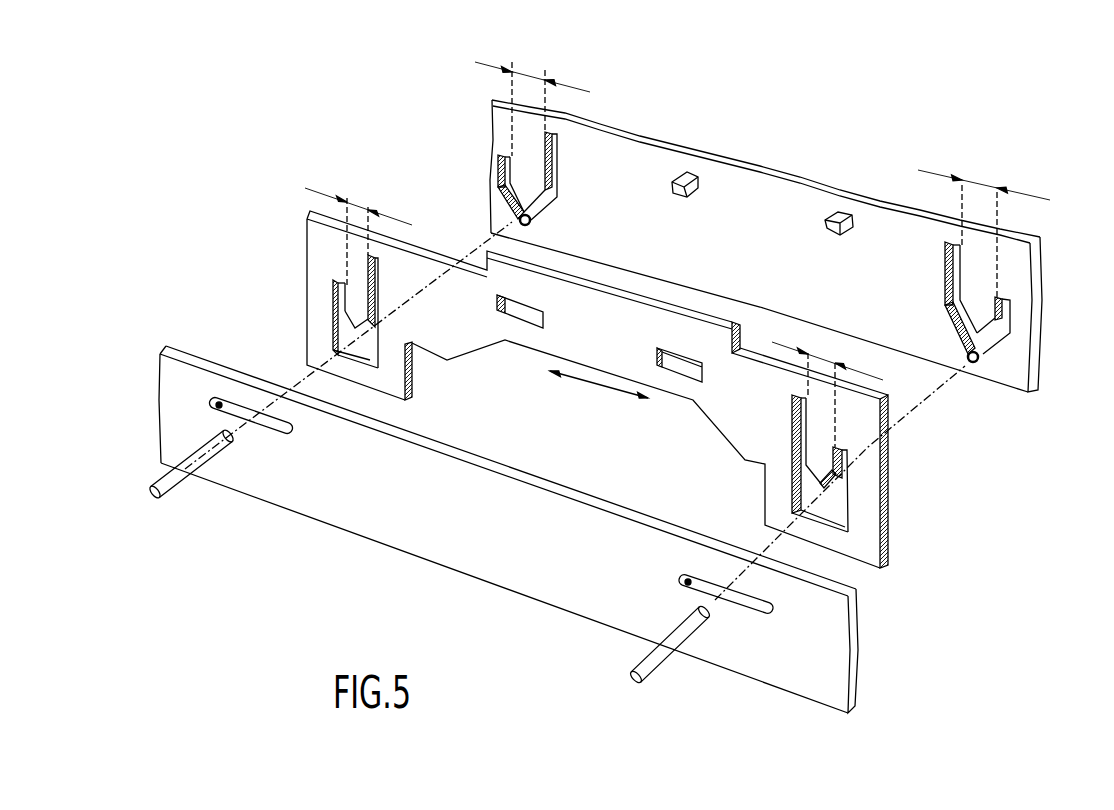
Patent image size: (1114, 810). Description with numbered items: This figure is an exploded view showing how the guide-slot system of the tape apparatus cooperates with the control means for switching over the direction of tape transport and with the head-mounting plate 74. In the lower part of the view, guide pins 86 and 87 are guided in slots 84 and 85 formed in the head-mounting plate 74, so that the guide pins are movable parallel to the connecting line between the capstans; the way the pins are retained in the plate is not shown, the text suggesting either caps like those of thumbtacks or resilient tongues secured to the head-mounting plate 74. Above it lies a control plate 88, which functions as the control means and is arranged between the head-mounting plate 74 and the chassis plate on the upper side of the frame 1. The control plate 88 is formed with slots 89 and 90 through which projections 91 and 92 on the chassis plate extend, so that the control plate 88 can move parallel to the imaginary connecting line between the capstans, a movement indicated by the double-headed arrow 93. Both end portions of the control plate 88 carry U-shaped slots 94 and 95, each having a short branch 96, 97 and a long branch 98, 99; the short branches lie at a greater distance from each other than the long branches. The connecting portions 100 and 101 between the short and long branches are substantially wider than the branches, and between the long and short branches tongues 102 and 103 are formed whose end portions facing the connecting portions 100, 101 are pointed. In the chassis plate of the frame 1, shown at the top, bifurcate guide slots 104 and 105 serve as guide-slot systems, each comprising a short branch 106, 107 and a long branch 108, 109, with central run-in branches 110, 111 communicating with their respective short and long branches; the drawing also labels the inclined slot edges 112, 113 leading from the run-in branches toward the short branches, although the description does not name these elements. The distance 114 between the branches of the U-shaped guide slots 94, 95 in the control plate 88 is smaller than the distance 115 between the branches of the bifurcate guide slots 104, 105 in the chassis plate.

The frame 1 is at (733, 192).
The head-mounting plate 74 is at (493, 487).
The slot 84 is at (212, 405).
The slot 85 is at (760, 603).
The guide pin 86 is at (162, 477).
The guide pin 87 is at (637, 670).
The control plate 88 is at (562, 333).
The slot 89 is at (528, 316).
The slot 90 is at (682, 364).
The projection 91 is at (680, 195).
The projection 92 is at (832, 234).
The double-headed arrow 93 is at (601, 384).
The U-shaped slot 94 is at (348, 327).
The U-shaped slot 95 is at (817, 465).
The short branch 96 is at (343, 293).
The short branch 97 is at (840, 457).
The long branch 98 is at (377, 268).
The long branch 99 is at (800, 408).
The connecting portion 100 is at (368, 360).
The connecting portion 101 is at (838, 513).
The tongue 102 is at (350, 315).
The tongue 103 is at (840, 480).
The bifurcate guide slot 104 is at (522, 182).
The bifurcate guide slot 105 is at (979, 334).
The short branch 106 is at (508, 163).
The short branch 107 is at (1005, 308).
The long branch 108 is at (555, 147).
The long branch 109 is at (953, 257).
The central run-in branch 110 is at (533, 222).
The central run-in branch 111 is at (978, 362).
The inclined slot edge 112 is at (535, 203).
The inclined slot edge 113 is at (990, 335).
The distance 114 is at (355, 202).
The distance 115 is at (527, 72).